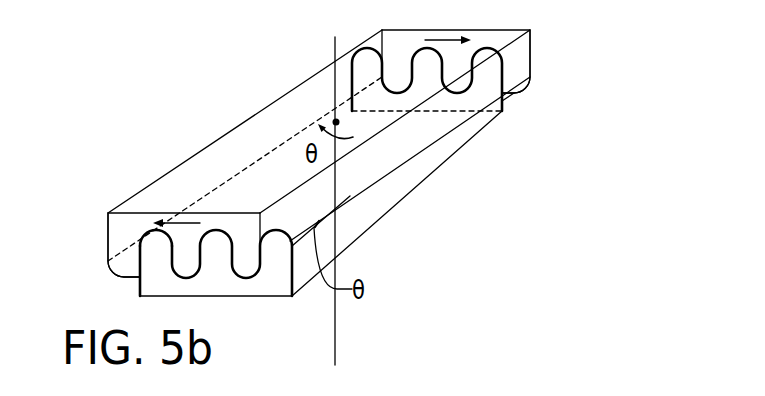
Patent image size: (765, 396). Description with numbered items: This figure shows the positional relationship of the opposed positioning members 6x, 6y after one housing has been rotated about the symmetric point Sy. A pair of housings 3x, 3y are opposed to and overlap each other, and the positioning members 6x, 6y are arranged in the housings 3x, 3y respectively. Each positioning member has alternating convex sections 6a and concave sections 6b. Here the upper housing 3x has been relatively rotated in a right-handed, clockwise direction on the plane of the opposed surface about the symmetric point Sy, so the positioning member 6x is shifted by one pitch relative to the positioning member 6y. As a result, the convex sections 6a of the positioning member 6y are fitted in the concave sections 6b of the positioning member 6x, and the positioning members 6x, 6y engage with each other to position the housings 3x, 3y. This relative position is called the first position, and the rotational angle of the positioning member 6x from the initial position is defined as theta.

The housing 3x is at (222, 137).
The housing 3y is at (353, 238).
The positioning member 6x is at (108, 232).
The convex sections 6a is at (150, 246).
The concave sections 6b is at (151, 231).
The positioning member 6y is at (139, 281).
The symmetric point Sy is at (321, 117).